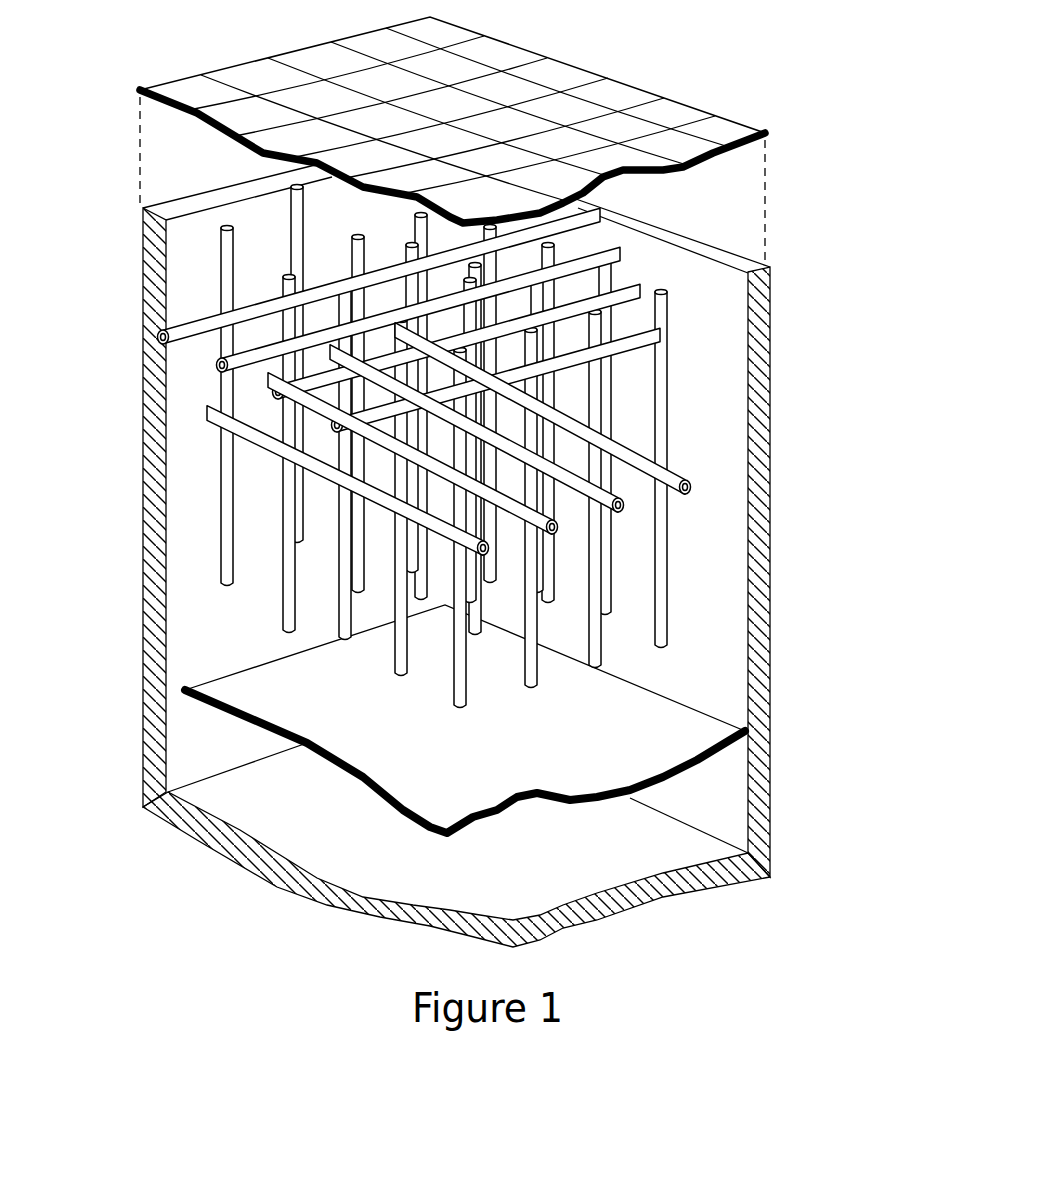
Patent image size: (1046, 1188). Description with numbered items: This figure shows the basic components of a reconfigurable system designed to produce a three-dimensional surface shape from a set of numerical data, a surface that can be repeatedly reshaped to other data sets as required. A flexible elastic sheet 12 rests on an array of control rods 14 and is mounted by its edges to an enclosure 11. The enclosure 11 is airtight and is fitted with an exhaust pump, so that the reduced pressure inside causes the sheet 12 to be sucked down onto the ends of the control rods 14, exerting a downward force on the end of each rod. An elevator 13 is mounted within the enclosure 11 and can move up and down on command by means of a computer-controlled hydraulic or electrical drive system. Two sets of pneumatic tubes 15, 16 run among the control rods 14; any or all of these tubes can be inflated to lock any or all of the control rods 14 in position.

The enclosure 11 is at (762, 478).
The flexible elastic sheet 12 is at (605, 83).
The elevator 13 is at (313, 702).
The control rods 14 is at (760, 272).
The pneumatic tubes 15 is at (330, 424).
The pneumatic tubes 16 is at (490, 549).